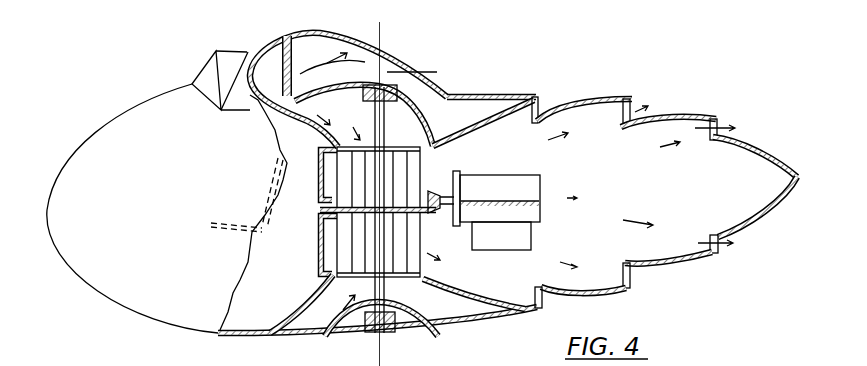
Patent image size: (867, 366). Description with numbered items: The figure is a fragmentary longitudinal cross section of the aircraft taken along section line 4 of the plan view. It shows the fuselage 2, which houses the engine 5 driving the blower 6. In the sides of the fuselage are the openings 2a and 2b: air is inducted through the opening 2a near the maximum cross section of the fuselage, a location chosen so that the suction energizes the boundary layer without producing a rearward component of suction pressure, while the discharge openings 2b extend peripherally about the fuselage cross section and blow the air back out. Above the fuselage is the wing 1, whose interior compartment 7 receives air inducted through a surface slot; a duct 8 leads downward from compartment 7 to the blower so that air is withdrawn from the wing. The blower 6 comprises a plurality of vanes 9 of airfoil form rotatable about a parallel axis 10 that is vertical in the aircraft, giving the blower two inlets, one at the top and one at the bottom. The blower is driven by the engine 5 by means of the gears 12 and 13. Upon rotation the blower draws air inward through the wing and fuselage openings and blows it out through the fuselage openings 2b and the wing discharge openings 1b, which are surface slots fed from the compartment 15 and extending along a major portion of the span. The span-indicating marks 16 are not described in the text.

The wing 1 is at (294, 33).
The discharge openings 1b is at (387, 72).
The fuselage 2 is at (473, 97).
The opening 2a is at (318, 331).
The discharge openings 2b is at (537, 299).
The section line 4 is at (403, 362).
The engine 5 is at (513, 192).
The blower 6 is at (400, 265).
The compartment 7 is at (268, 80).
The duct 8 is at (392, 123).
The vanes 9 is at (418, 163).
The axis 10 is at (311, 304).
The gear 12 is at (440, 188).
The gear 13 is at (429, 210).
The compartment 15 is at (437, 72).
The span dimension 16 is at (523, 262).